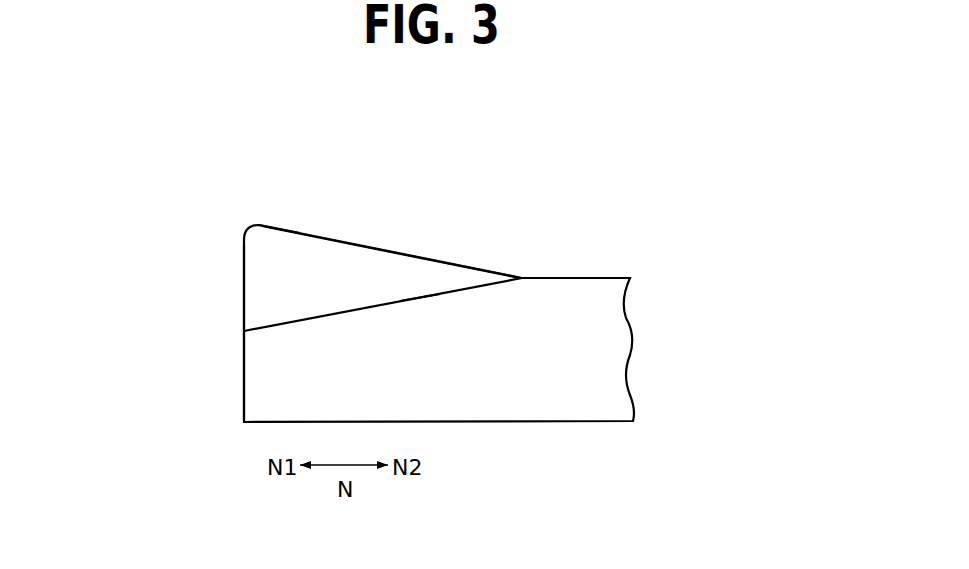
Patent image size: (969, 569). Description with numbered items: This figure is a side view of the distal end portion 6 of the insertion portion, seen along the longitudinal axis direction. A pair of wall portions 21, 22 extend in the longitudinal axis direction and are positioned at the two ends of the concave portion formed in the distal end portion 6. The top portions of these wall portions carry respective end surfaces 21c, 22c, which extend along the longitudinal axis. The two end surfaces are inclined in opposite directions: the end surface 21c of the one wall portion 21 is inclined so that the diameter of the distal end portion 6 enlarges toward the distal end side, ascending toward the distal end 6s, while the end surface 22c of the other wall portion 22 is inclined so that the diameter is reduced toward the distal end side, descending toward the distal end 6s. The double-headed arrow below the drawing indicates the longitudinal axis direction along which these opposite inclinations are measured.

The distal end portion 6 is at (302, 343).
The distal end 6s is at (242, 292).
The wall portion 21 is at (378, 273).
The end surface 21c is at (280, 222).
The wall portion 22 is at (340, 346).
The end surface 22c is at (421, 286).